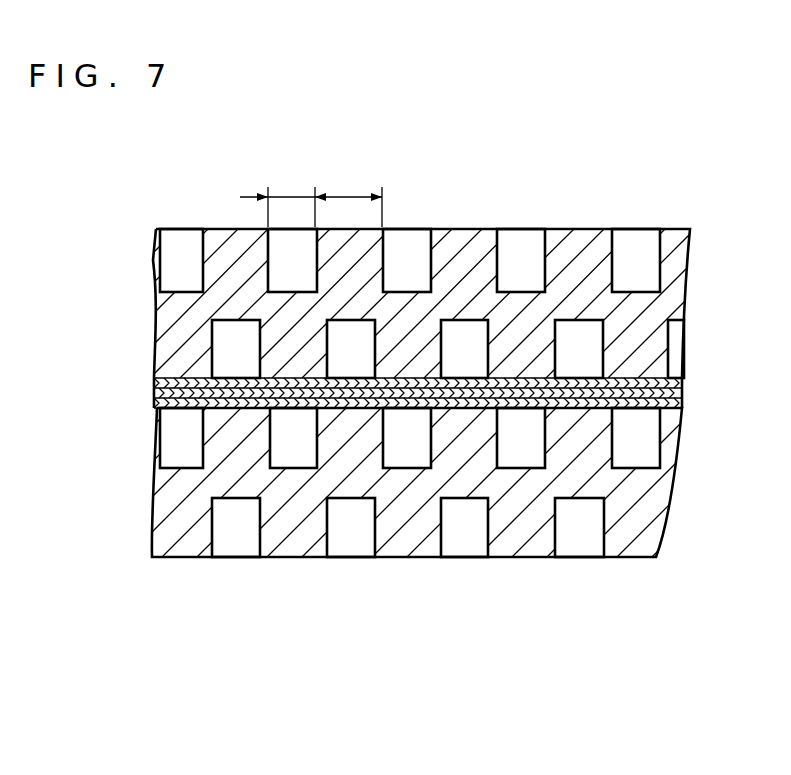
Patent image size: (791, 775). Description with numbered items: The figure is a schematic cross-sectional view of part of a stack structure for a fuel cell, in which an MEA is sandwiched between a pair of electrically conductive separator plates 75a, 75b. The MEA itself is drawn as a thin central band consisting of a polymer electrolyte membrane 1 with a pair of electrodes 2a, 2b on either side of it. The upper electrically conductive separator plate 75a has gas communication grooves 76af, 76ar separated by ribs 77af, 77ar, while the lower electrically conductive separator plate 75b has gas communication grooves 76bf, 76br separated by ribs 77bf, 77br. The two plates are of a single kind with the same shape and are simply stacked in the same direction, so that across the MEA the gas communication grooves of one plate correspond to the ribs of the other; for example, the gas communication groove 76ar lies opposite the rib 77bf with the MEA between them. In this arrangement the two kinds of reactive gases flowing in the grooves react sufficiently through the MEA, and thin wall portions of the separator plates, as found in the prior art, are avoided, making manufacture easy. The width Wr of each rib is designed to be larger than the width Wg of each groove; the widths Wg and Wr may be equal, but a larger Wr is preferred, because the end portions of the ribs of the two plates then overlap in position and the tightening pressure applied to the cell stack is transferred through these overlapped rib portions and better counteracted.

The electrically conductive separator plate 75a is at (373, 243).
The electrically conductive separator plate 75b is at (368, 522).
The electrode 2a is at (154, 382).
The polymer electrolyte membrane 1 is at (153, 393).
The electrode 2b is at (155, 405).
The gas communication groove 76af is at (417, 253).
The gas communication groove 76ar is at (463, 345).
The rib 77af is at (463, 265).
The rib 77ar is at (403, 355).
The gas communication groove 76bf is at (397, 455).
The gas communication groove 76br is at (468, 535).
The rib 77bf is at (458, 447).
The rib 77br is at (415, 532).
The groove width Wg is at (283, 192).
The rib width Wr is at (348, 192).